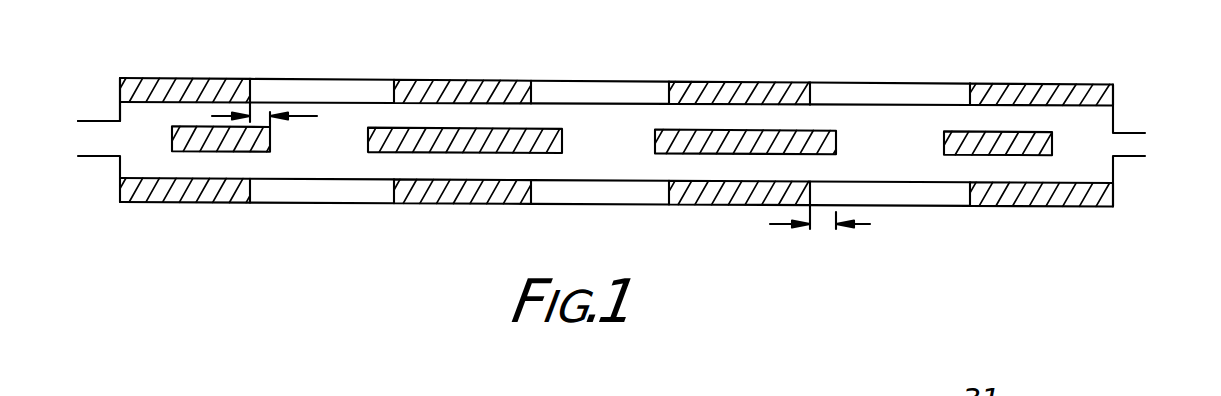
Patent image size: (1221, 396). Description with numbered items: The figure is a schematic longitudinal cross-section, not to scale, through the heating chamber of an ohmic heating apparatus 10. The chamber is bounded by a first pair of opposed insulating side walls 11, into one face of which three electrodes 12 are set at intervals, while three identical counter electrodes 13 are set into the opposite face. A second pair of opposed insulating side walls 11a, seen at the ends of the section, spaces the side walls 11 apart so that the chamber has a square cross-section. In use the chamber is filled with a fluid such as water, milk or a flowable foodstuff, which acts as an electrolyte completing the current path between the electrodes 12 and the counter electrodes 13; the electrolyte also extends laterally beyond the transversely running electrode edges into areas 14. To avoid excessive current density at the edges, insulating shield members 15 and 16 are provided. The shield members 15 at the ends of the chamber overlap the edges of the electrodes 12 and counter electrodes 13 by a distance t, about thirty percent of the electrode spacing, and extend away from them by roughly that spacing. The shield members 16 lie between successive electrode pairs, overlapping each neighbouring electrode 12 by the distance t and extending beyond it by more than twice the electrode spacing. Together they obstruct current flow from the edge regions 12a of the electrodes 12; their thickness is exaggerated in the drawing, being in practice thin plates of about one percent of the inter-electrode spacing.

The ohmic heating apparatus 10 is at (1113, 118).
The insulating side walls 11 is at (1088, 90).
The second pair of insulating side walls 11a is at (137, 117).
The electrodes 12 is at (885, 92).
The edge regions of the electrodes 12a is at (817, 95).
The counter electrodes 13 is at (925, 193).
The areas beyond electrode edges 14 is at (800, 113).
The end shield members 15 is at (270, 152).
The intermediate shield members 16 is at (382, 153).